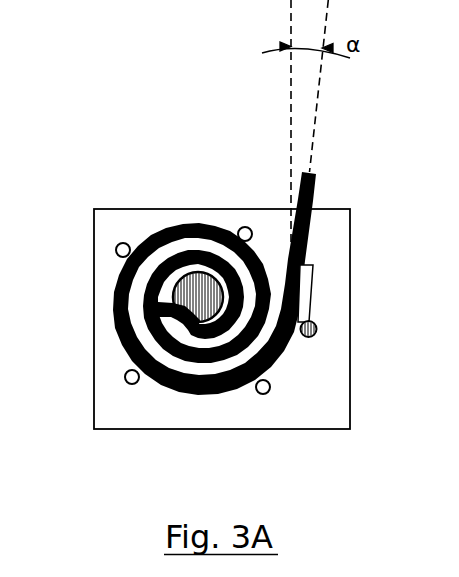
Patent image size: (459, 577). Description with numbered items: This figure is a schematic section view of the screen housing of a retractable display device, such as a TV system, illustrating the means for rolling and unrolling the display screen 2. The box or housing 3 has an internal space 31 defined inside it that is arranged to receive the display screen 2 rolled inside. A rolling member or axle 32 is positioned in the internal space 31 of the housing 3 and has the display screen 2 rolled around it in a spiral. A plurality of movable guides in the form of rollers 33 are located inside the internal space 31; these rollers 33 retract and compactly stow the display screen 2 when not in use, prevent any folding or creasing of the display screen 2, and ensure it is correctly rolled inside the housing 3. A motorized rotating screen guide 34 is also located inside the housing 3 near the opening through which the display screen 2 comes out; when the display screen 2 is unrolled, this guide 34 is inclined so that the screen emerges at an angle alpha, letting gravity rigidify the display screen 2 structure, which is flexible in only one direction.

The display screen 2 is at (316, 180).
The housing 3 is at (351, 387).
The internal space 31 is at (117, 409).
The axle 32 is at (201, 288).
The rollers 33 is at (264, 392).
The motorized rotating screen guide 34 is at (312, 302).